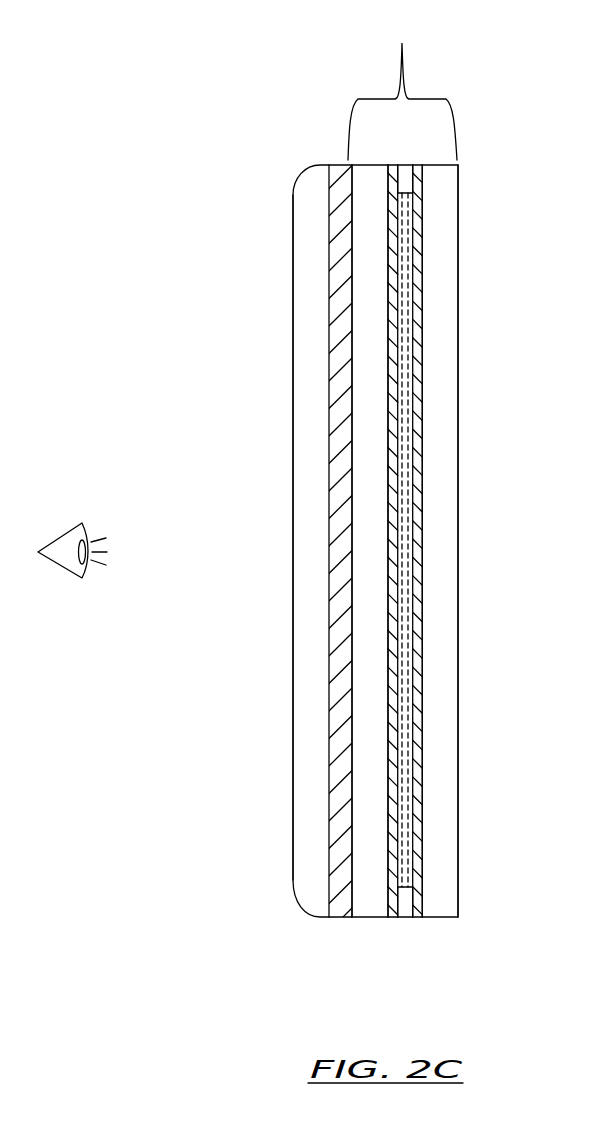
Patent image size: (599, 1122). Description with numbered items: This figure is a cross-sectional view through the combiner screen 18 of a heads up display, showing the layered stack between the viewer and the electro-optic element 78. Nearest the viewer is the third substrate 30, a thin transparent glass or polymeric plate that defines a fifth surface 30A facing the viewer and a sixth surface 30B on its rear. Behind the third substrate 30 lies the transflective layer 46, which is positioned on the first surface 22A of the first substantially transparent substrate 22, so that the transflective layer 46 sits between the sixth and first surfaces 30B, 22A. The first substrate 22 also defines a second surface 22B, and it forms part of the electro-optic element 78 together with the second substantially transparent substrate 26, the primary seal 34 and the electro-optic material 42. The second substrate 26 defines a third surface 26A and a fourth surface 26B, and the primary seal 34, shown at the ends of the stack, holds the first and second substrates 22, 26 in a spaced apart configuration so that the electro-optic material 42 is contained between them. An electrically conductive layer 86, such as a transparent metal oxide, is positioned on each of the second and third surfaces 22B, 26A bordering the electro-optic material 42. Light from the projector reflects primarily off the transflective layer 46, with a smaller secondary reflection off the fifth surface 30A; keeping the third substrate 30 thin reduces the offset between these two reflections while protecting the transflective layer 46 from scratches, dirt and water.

The combiner screen 18 is at (238, 112).
The first substantially transparent substrate 22 is at (301, 541).
The first surface 22A is at (352, 533).
The second surface 22B is at (388, 746).
The second substantially transparent substrate 26 is at (422, 541).
The third surface 26A is at (422, 672).
The fourth surface 26B is at (460, 778).
The third substrate 30 is at (272, 541).
The fifth surface 30A is at (292, 378).
The sixth surface 30B is at (329, 447).
The primary seal 34 is at (405, 175).
The electro-optic material 42 is at (405, 558).
The transflective layer 46 is at (345, 230).
The electro-optic element 78 is at (402, 90).
The electrically conductive layer 86 is at (395, 352).